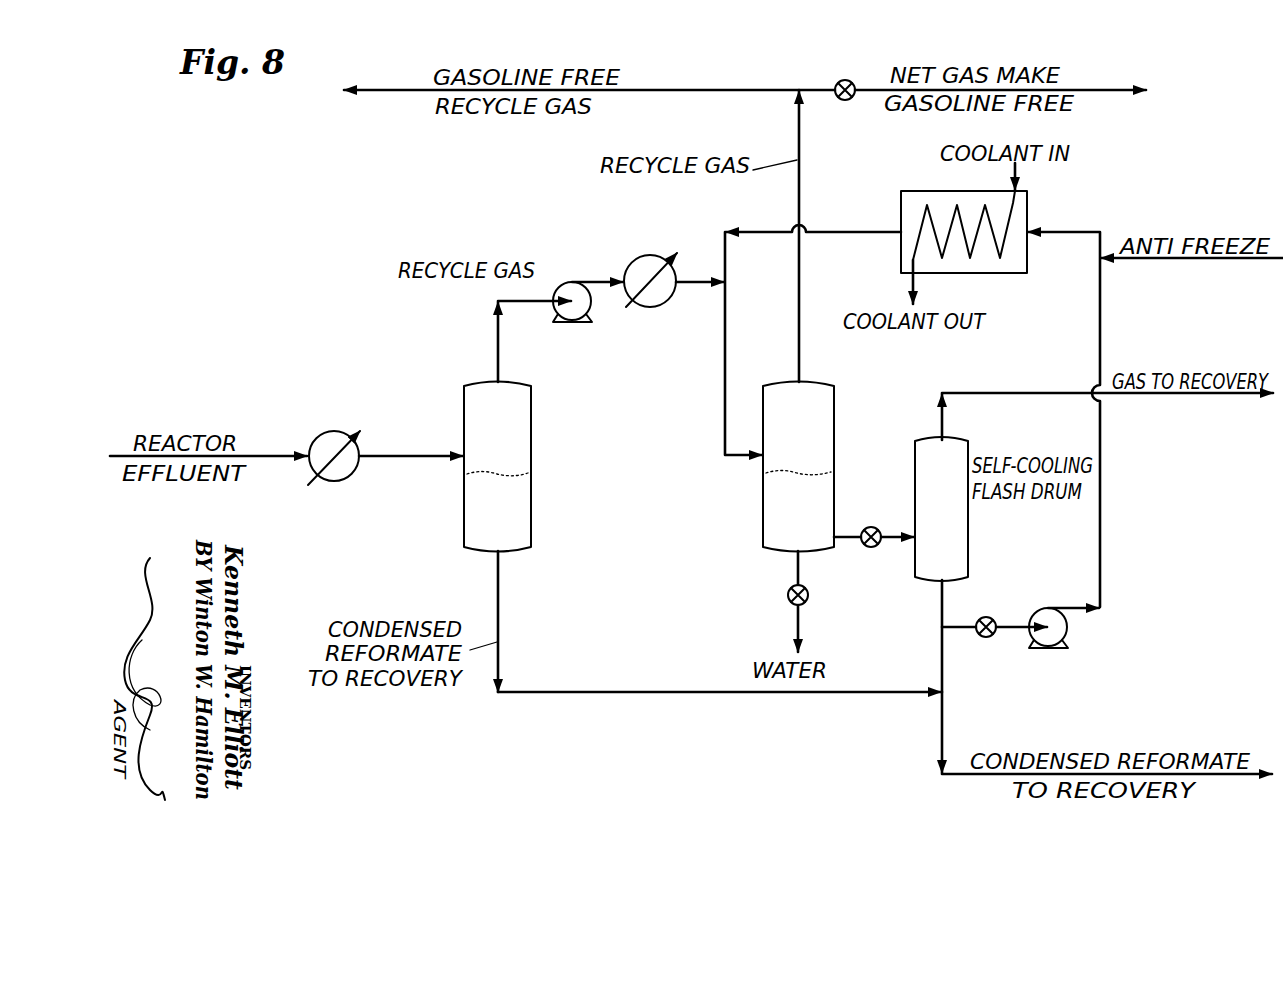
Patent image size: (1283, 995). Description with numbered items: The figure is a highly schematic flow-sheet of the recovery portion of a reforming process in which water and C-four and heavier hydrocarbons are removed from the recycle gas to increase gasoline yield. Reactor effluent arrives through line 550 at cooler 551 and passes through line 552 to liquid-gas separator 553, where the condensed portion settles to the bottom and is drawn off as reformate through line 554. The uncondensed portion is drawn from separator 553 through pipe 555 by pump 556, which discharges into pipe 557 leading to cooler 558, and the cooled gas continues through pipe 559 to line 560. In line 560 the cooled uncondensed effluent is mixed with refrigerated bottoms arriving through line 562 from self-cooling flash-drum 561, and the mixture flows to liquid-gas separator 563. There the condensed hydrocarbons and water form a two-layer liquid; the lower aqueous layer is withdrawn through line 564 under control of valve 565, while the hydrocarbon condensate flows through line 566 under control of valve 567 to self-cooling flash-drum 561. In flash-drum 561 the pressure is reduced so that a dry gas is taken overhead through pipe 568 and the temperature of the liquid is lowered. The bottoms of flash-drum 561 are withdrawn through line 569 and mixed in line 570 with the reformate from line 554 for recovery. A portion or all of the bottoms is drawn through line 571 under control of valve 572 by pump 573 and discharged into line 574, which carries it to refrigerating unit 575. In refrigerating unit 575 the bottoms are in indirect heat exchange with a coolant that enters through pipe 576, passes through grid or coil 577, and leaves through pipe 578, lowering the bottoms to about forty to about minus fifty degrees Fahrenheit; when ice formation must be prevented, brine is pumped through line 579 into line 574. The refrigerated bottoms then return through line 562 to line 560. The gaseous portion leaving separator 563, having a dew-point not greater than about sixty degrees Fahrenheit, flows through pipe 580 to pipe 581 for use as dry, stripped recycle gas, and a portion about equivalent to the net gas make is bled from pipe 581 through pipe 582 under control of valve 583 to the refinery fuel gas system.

The line 550 is at (276, 462).
The cooler 551 is at (347, 432).
The line 552 is at (400, 460).
The liquid-gas separator 553 is at (531, 456).
The line 554 is at (623, 695).
The pipe 555 is at (497, 343).
The pump 556 is at (568, 322).
The pipe 557 is at (612, 277).
The cooler 558 is at (641, 307).
The pipe 559 is at (691, 286).
The line 560 is at (723, 401).
The self-cooling flash-drum 561 is at (960, 521).
The line 562 is at (813, 217).
The liquid-gas separator 563 is at (763, 496).
The line 564 is at (793, 620).
The valve 565 is at (787, 593).
The line 566 is at (888, 545).
The valve 567 is at (869, 527).
The pipe 568 is at (1030, 380).
The line 569 is at (940, 660).
The line 570 is at (940, 733).
The line 571 is at (953, 632).
The valve 572 is at (988, 612).
The pump 573 is at (1067, 632).
The line 574 is at (1100, 513).
The refrigerating unit 575 is at (910, 193).
The pipe 576 is at (1017, 177).
The grid or coil 577 is at (1002, 256).
The pipe 578 is at (910, 281).
The line 579 is at (1194, 262).
The pipe 580 is at (797, 326).
The pipe 581 is at (727, 88).
The pipe 582 is at (1113, 88).
The valve 583 is at (848, 78).